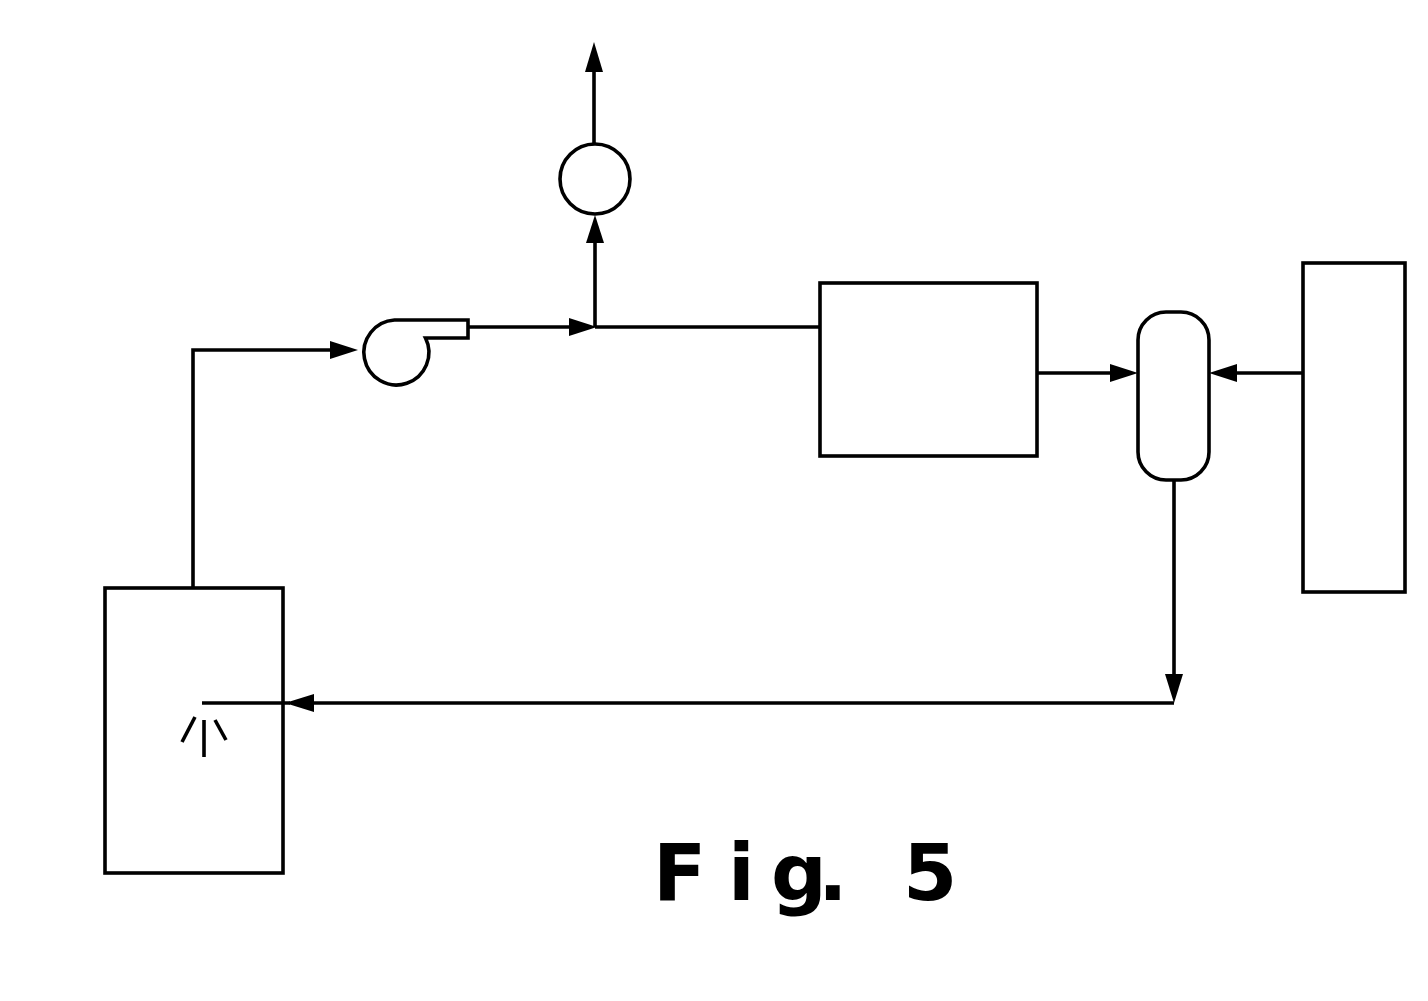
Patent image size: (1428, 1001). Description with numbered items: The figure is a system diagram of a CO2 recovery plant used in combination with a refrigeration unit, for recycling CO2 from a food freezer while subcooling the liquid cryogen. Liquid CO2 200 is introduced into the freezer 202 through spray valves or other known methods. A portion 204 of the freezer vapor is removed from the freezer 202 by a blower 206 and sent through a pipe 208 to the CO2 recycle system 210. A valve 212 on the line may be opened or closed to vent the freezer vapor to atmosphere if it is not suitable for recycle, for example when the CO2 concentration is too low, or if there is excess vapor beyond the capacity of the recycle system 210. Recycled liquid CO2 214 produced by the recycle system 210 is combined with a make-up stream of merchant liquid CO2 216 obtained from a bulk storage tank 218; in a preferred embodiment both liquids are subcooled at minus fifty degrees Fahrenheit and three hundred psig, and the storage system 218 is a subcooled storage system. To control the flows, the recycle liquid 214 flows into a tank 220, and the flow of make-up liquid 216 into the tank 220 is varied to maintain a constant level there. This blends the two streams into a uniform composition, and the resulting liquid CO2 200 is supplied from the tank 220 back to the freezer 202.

The liquid CO2 200 is at (513, 700).
The freezer 202 is at (285, 658).
The portion of the freezer vapor 204 is at (273, 348).
The blower 206 is at (442, 320).
The pipe 208 is at (745, 328).
The CO2 recycle system 210 is at (937, 283).
The valve 212 is at (558, 178).
The recycled liquid CO2 214 is at (1082, 370).
The make-up stream of merchant liquid CO2 216 is at (1267, 370).
The bulk storage tank 218 is at (1357, 593).
The tank 220 is at (1138, 440).